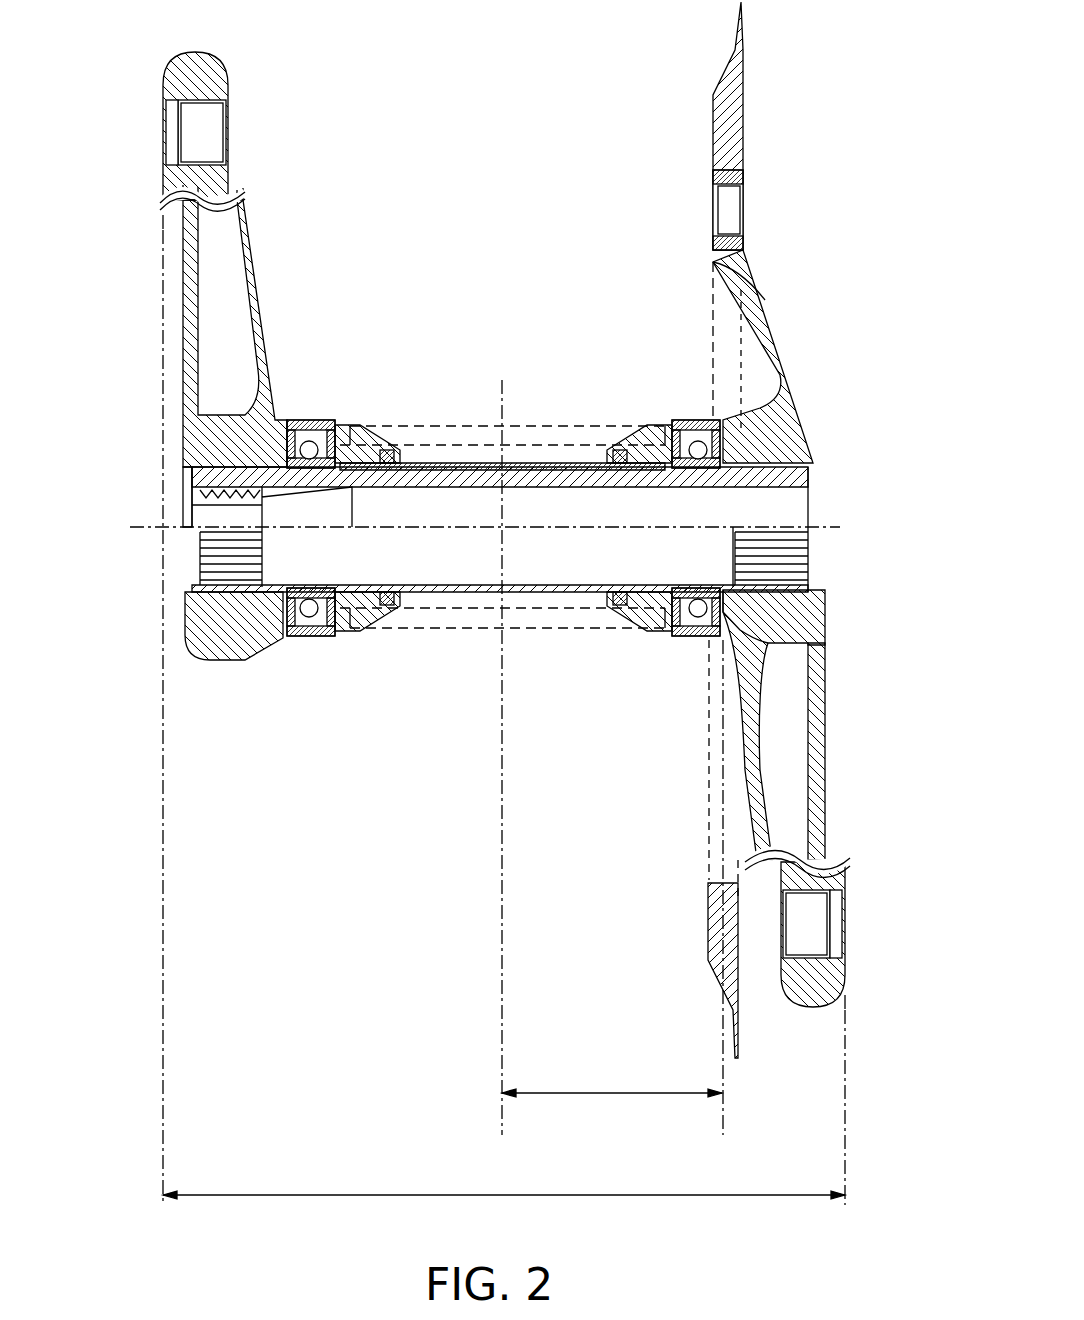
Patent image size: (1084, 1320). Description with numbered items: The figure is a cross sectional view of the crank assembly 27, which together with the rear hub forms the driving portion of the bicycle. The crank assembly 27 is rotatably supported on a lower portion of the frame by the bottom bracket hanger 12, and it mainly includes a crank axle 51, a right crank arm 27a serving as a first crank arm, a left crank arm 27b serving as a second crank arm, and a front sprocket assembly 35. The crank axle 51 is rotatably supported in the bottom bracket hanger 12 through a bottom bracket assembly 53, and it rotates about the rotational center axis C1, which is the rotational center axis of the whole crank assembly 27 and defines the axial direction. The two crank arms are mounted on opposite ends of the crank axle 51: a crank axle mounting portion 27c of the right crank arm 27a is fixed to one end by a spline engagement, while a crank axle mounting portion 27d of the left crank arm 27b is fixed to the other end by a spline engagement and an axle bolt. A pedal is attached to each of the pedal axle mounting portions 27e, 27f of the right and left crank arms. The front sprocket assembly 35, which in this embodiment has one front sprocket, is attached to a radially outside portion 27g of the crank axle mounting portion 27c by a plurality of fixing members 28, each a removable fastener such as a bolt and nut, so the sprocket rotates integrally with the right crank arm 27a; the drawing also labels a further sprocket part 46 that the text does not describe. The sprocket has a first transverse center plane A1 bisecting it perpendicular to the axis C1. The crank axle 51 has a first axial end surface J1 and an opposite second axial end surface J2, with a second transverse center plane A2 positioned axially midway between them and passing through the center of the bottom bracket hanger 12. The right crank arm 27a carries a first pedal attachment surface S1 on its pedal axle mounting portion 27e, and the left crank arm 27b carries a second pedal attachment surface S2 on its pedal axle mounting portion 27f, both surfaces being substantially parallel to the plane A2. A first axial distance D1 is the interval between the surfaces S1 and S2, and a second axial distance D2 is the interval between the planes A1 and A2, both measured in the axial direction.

The bottom bracket hanger 12 is at (385, 412).
The crank assembly 27 is at (475, 140).
The right crank arm 27a is at (834, 766).
The left crank arm 27b is at (180, 368).
The crank axle mounting portion 27c is at (818, 612).
The crank axle mounting portion 27d is at (210, 640).
The pedal axle mounting portion 27e is at (840, 935).
The pedal axle mounting portion 27f is at (176, 135).
The radially outside portion 27g is at (748, 252).
The fixing member 28 is at (748, 206).
The front sprocket assembly 35 is at (757, 112).
The rotor disc 46 is at (735, 55).
The crank axle 51 is at (540, 462).
The bottom bracket assembly 53 is at (340, 653).
The first axial end surface J1 is at (812, 470).
The second axial end surface J2 is at (186, 470).
The first pedal attachment surface S1 is at (845, 998).
The second pedal attachment surface S2 is at (180, 188).
The rotational center axis C1 is at (502, 529).
The first transverse center plane A1 is at (723, 888).
The second transverse center plane A2 is at (499, 758).
The first axial distance D1 is at (504, 717).
The second axial distance D2 is at (612, 1080).